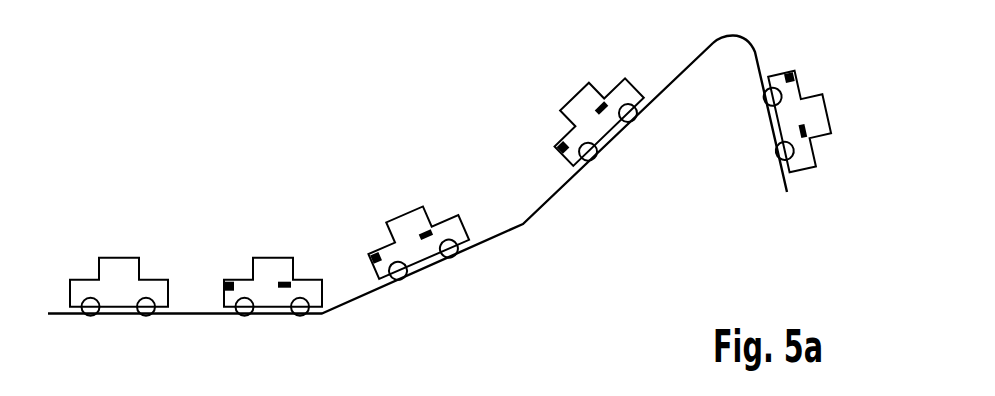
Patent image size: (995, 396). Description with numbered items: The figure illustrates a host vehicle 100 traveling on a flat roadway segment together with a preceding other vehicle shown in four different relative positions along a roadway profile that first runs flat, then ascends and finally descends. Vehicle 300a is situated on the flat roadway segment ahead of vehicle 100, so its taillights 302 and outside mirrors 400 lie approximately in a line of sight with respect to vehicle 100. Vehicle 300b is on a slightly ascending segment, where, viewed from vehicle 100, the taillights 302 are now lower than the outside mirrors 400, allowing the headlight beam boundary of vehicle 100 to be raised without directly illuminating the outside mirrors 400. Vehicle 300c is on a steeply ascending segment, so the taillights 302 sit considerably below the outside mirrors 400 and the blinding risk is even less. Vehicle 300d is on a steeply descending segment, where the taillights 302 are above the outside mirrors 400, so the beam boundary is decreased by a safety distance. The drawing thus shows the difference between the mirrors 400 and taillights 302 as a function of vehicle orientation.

The vehicle 100 is at (119, 258).
The vehicle 300a is at (254, 281).
The vehicle 300b is at (403, 215).
The vehicle 300c is at (572, 100).
The vehicle 300d is at (808, 92).
The taillights 302 is at (224, 286).
The outside mirrors 400 is at (284, 288).